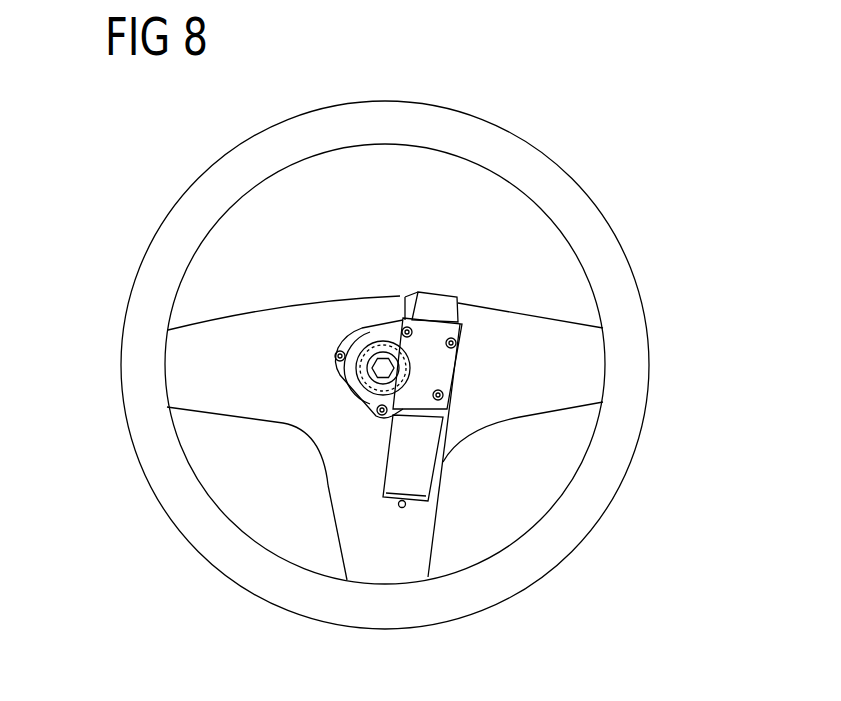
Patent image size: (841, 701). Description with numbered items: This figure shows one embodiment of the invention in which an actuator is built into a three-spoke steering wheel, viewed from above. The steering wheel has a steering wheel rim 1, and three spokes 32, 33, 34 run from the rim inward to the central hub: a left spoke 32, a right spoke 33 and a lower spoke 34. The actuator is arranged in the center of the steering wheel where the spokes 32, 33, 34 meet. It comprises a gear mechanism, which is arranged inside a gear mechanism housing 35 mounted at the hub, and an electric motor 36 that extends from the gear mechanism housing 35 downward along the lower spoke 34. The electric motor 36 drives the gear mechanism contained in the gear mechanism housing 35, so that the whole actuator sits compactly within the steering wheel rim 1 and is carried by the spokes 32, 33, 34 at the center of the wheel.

The steering wheel rim 1 is at (580, 212).
The spoke 32 is at (187, 387).
The spoke 33 is at (585, 362).
The spoke 34 is at (370, 552).
The gear mechanism housing 35 is at (428, 368).
The electric motor 36 is at (420, 468).